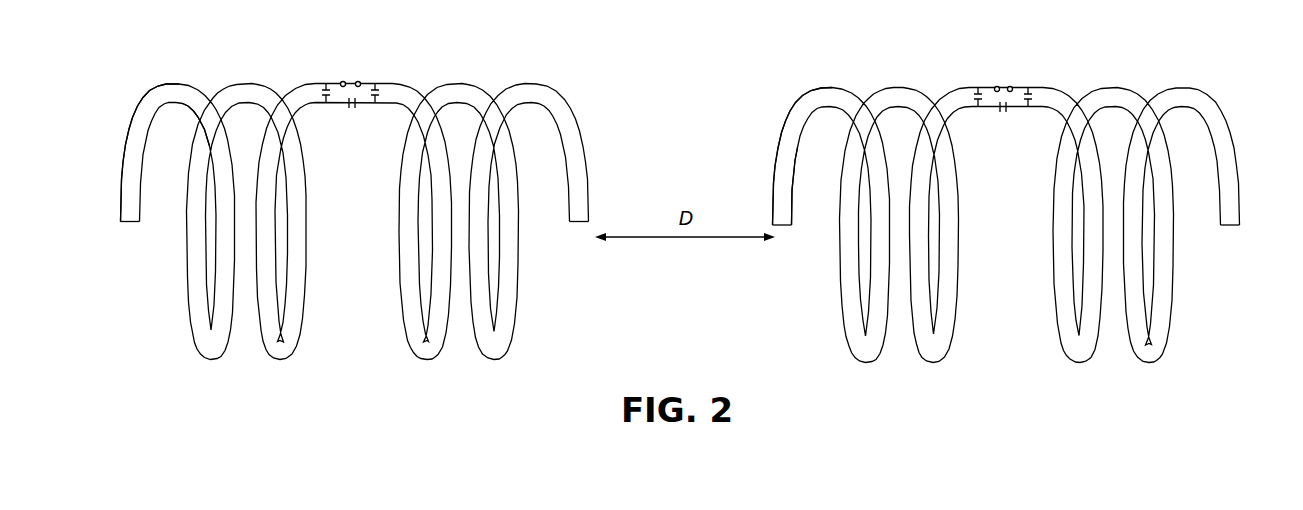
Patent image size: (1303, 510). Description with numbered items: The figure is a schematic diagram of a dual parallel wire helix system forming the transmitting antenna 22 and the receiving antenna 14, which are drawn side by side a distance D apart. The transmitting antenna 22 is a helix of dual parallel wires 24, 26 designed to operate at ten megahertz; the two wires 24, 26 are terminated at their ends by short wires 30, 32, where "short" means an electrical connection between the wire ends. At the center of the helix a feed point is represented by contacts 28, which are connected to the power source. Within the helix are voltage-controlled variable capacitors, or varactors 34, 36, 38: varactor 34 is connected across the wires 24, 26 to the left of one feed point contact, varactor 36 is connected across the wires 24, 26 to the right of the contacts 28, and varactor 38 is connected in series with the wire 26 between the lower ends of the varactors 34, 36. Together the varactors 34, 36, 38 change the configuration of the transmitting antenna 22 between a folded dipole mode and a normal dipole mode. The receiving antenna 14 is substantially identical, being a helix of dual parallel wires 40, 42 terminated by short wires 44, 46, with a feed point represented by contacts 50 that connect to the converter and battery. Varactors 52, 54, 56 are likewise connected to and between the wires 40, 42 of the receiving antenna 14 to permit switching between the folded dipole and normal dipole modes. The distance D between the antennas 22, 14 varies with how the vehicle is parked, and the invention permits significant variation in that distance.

The receiving antenna 14 is at (897, 76).
The transmitting antenna 22 is at (246, 74).
The wire 24 is at (142, 106).
The wire 26 is at (193, 114).
The contacts 28 is at (359, 81).
The short wire 30 is at (128, 223).
The short wire 32 is at (579, 225).
The varactor 34 is at (324, 83).
The varactor 36 is at (379, 102).
The varactor 38 is at (348, 107).
The wire 40 is at (800, 102).
The wire 42 is at (800, 162).
The short wire 44 is at (781, 226).
The short wire 46 is at (1233, 230).
The contacts 50 is at (1010, 86).
The varactor 52 is at (978, 88).
The varactor 54 is at (1034, 108).
The varactor 56 is at (1000, 110).